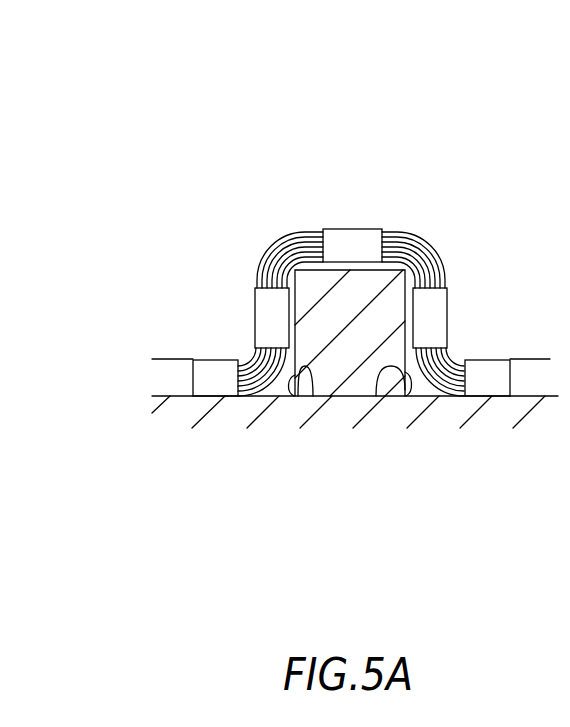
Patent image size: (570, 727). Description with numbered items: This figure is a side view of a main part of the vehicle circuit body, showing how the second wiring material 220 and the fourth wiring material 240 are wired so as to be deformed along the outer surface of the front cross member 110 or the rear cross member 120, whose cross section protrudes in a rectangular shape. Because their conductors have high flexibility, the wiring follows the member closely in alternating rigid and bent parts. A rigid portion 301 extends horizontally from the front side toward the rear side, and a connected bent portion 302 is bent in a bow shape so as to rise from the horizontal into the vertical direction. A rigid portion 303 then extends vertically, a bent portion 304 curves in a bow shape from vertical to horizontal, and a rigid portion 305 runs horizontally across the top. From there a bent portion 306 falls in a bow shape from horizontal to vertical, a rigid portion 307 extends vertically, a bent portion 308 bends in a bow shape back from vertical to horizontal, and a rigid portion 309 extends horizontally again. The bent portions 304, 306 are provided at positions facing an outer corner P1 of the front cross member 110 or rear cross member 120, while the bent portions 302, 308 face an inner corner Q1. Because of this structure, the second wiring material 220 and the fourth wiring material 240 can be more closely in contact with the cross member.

The front cross member 110 is at (355, 422).
The rear cross member 120 is at (352, 357).
The second wiring material 220 is at (355, 320).
The fourth wiring material 240 is at (355, 320).
The rigid portion 301 is at (203, 383).
The bent portion 302 is at (249, 396).
The rigid portion 303 is at (260, 313).
The bent portion 304 is at (282, 236).
The rigid portion 305 is at (350, 240).
The bent portion 306 is at (408, 159).
The rigid portion 307 is at (435, 315).
The bent portion 308 is at (430, 388).
The rigid portion 309 is at (494, 380).
The outer corner P1 is at (356, 186).
The inner corner Q1 is at (313, 396).